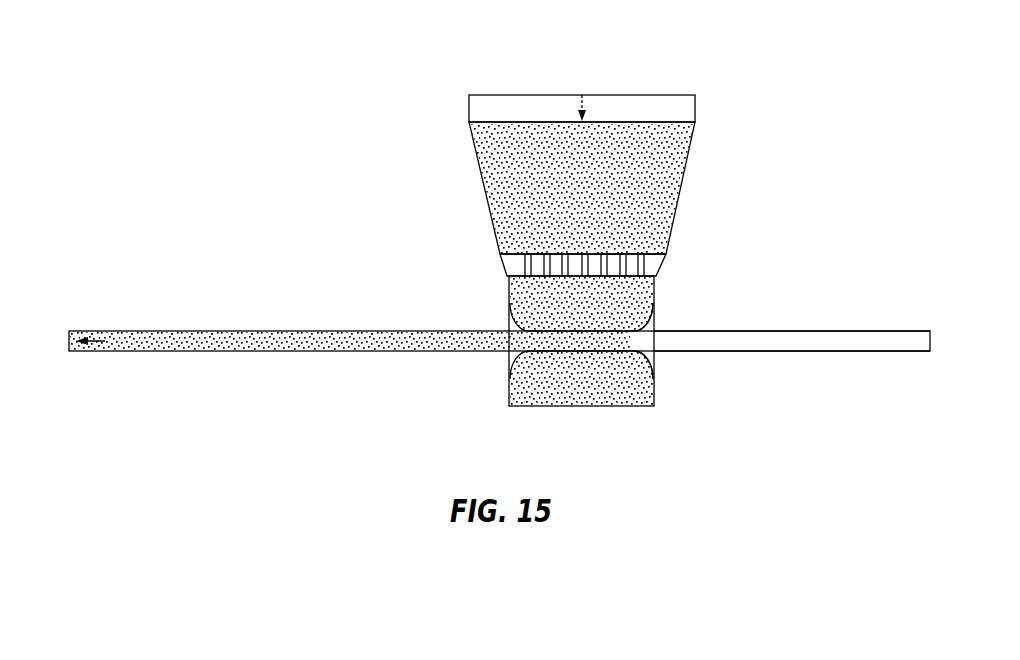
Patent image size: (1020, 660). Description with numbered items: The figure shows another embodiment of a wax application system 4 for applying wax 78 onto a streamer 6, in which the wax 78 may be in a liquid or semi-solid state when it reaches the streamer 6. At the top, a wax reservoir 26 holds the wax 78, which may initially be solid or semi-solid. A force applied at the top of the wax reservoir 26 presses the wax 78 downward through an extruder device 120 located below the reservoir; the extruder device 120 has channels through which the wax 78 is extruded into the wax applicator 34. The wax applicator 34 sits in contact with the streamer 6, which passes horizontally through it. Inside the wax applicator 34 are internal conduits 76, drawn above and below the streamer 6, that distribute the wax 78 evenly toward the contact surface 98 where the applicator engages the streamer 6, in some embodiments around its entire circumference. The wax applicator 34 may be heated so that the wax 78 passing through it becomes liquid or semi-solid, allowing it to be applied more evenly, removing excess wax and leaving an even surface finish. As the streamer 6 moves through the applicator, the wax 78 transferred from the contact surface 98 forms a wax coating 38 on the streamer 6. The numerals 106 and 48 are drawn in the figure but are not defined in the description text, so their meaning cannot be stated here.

The wax application system 4 is at (316, 136).
The material inlet 106 is at (580, 114).
The wax reservoir 26 is at (683, 173).
The wax 78 is at (498, 175).
The extruder device 120 is at (662, 260).
The wax applicator 34 is at (635, 289).
The internal conduits 76 is at (528, 309).
The contact surface 98 is at (635, 327).
The wax coating 38 is at (140, 352).
The streamer 6 is at (842, 331).
The material layer 48 is at (120, 340).